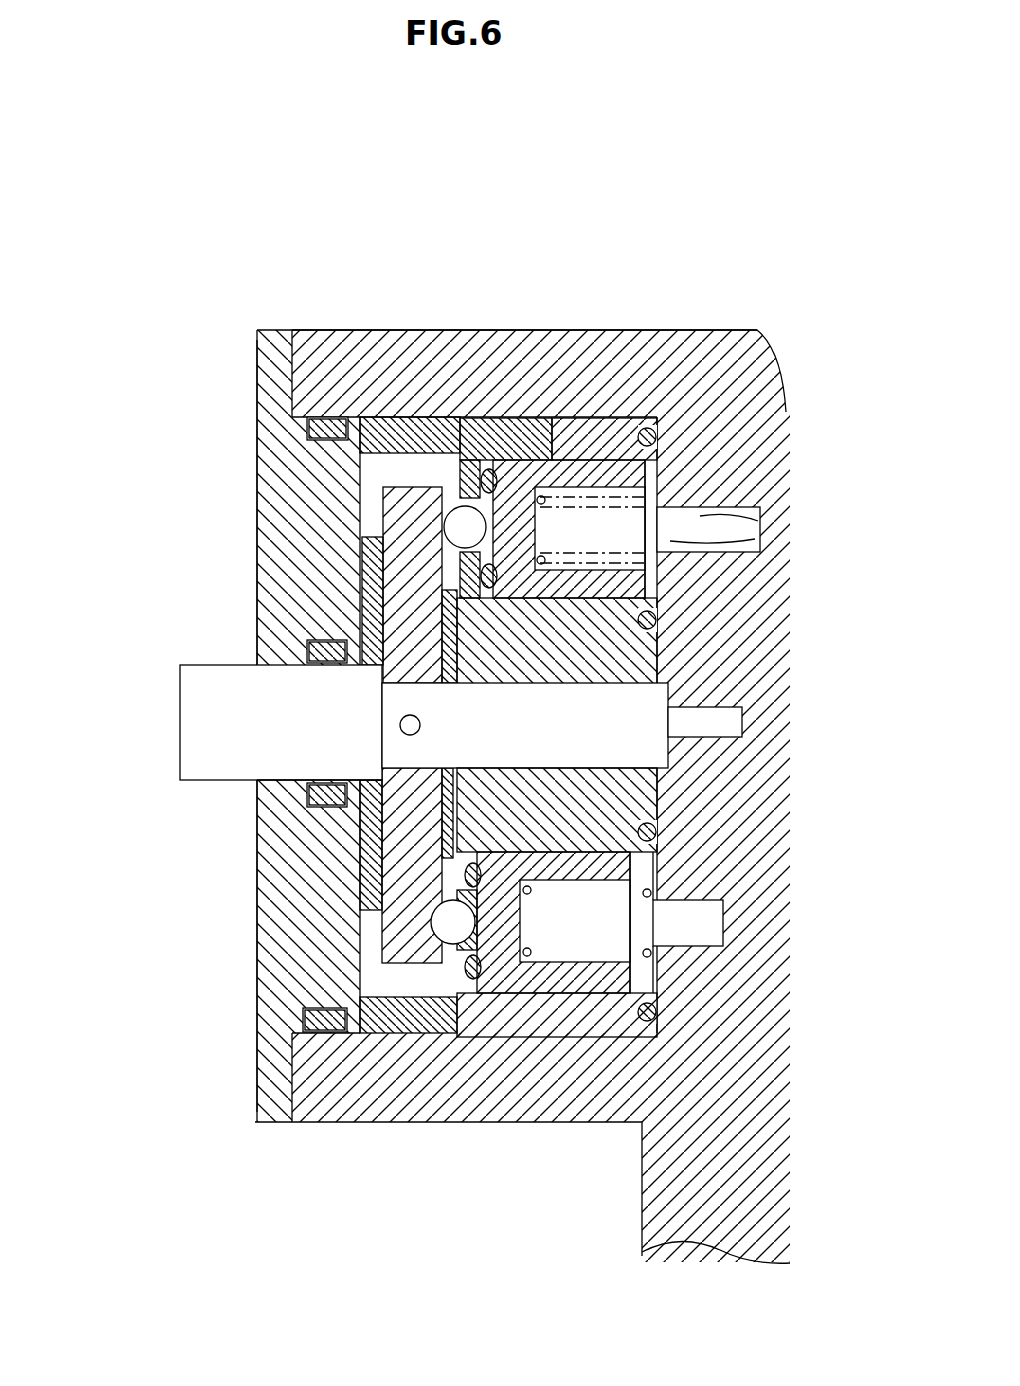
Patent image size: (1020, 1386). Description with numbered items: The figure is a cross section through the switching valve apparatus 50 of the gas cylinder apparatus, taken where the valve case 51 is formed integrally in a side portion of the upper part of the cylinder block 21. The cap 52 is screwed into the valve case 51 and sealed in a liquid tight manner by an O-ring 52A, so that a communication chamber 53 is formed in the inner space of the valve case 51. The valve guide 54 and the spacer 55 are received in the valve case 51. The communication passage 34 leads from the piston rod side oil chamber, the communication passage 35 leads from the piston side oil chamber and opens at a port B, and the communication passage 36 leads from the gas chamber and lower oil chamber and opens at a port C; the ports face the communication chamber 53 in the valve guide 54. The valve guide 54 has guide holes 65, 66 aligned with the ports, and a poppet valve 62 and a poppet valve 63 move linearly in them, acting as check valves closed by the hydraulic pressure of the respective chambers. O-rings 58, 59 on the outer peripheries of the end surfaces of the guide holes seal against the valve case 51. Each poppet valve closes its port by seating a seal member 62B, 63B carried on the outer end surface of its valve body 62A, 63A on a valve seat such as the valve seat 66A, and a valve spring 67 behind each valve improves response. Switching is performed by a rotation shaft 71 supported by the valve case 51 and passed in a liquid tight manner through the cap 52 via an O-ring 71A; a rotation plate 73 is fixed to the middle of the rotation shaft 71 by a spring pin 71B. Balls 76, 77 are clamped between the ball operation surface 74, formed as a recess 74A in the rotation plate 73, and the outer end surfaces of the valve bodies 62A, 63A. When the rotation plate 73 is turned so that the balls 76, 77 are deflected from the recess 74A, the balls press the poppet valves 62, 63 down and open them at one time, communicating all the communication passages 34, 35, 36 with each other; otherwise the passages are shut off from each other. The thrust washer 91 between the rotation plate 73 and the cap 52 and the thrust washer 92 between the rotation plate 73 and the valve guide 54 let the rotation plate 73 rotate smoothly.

The cylinder block 21 is at (668, 1185).
The communication passage 34 is at (742, 722).
The communication passage 35 is at (714, 927).
The communication passage 36 is at (760, 510).
The switching valve apparatus 50 is at (170, 429).
The valve case 51 is at (417, 345).
The cap 52 is at (270, 385).
The O-ring 52A is at (320, 425).
The communication chamber 53 is at (380, 452).
The valve guide 54 is at (597, 433).
The spacer 55 is at (445, 418).
The O-ring 58 is at (654, 1015).
The O-ring 59 is at (655, 440).
The poppet valve 62 is at (527, 1005).
The valve body 62A is at (560, 993).
The seal member 62B is at (480, 963).
The poppet valve 63 is at (552, 437).
The valve body 63A is at (618, 468).
The seal member 63B is at (490, 470).
The guide hole 65 is at (657, 978).
The guide hole 66 is at (663, 480).
The valve seat 66A is at (462, 597).
The valve spring 67 is at (660, 533).
The rotation shaft 71 is at (205, 735).
The O-ring 71A is at (330, 795).
The spring pin 71B is at (400, 725).
The rotation plate 73 is at (392, 932).
The ball operation surface 74 is at (447, 485).
The recess 74A is at (440, 930).
The ball 76 is at (450, 930).
The ball 77 is at (455, 527).
The thrust washer 91 is at (370, 617).
The thrust washer 92 is at (450, 828).
The port B is at (646, 869).
The port C is at (650, 580).